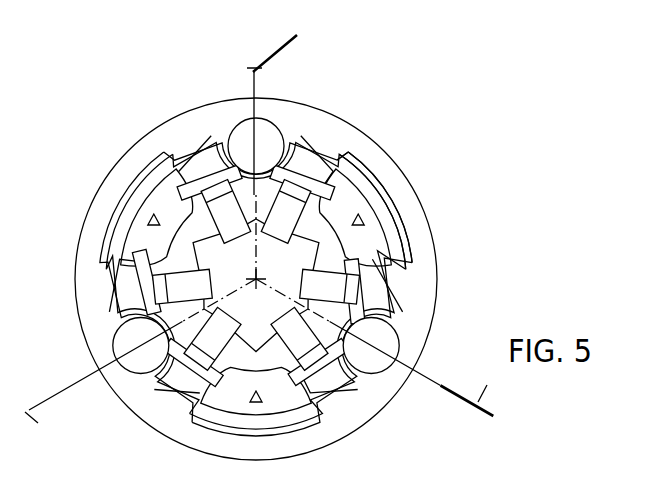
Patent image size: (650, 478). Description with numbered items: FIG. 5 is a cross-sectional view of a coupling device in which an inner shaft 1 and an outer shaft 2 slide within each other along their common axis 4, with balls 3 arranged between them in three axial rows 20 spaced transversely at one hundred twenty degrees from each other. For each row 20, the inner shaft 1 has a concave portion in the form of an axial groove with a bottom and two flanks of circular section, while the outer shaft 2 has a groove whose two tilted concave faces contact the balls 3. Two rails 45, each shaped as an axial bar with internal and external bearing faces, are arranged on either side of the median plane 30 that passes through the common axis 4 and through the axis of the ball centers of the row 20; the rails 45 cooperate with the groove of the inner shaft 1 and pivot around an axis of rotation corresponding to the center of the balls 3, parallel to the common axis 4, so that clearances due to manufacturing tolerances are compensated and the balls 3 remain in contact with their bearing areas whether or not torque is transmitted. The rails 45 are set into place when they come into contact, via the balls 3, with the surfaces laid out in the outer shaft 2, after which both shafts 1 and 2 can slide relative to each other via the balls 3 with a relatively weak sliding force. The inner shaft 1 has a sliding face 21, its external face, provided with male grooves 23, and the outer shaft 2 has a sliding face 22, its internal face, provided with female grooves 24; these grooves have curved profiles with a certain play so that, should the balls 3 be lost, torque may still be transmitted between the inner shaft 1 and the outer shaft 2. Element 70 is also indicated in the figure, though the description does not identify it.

The inner shaft 1 is at (154, 187).
The outer shaft 2 is at (94, 246).
The balls 3 is at (267, 130).
The common axis 4 is at (256, 279).
The axial rows 20 is at (239, 141).
The sliding face of the inner shaft 21 is at (172, 158).
The sliding face of the outer shaft 22 is at (224, 160).
The male grooves 23 is at (364, 188).
The female grooves 24 is at (396, 188).
The median plane 30 is at (270, 234).
The rails 45 is at (200, 177).
The spring element 70 is at (322, 158).